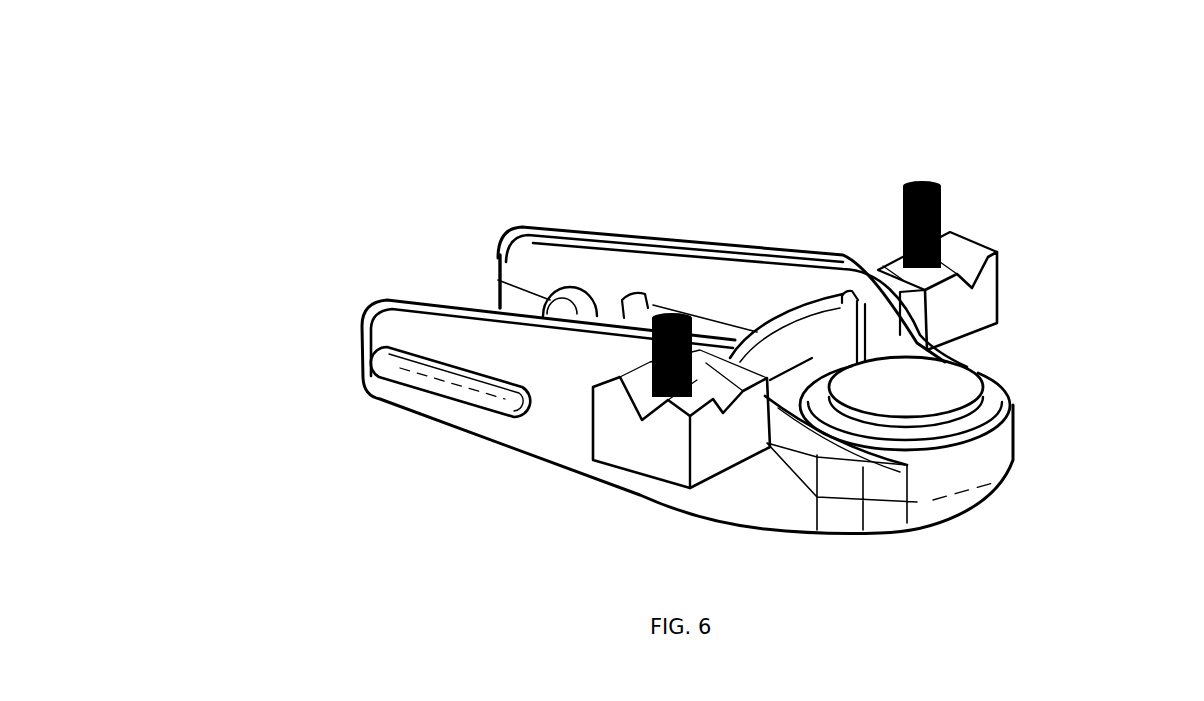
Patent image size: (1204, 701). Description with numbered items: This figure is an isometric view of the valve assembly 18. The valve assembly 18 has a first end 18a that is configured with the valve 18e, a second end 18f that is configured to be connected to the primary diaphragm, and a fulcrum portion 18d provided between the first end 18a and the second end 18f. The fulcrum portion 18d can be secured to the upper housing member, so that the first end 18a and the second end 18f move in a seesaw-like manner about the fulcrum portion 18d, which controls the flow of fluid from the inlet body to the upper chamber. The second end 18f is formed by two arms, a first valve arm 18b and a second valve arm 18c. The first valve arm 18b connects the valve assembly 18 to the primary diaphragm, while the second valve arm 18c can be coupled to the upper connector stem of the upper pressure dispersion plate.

The valve assembly 18 is at (478, 108).
The first end 18a is at (1052, 395).
The first valve arm 18b is at (387, 333).
The second valve arm 18c is at (500, 242).
The fulcrum portion 18d is at (877, 270).
The valve 18e is at (957, 393).
The second end 18f is at (332, 268).